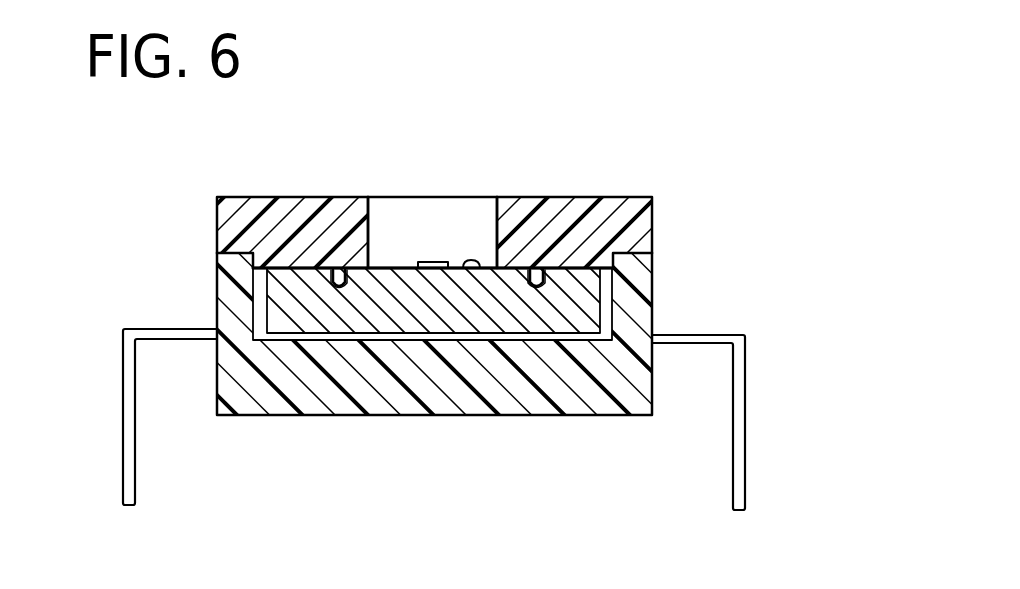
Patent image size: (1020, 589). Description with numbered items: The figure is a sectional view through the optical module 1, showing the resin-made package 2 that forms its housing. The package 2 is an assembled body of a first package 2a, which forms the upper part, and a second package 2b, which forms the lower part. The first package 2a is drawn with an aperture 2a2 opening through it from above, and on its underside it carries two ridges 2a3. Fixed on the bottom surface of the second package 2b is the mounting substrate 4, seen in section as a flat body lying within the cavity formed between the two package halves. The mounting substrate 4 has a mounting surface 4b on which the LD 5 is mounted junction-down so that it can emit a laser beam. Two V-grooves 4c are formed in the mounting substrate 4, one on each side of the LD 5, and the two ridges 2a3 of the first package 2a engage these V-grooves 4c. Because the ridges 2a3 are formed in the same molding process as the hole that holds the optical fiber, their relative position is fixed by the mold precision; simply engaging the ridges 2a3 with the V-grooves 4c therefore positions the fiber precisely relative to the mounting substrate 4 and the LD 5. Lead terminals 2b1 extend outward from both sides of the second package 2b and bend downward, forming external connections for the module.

The optical module 1 is at (433, 304).
The package 2 is at (433, 325).
The first package 2a is at (445, 213).
The aperture 2a2 is at (494, 255).
The ridges 2a3 is at (333, 272).
The second package 2b is at (433, 377).
The lead terminals 2b1 is at (124, 463).
The mounting substrate 4 is at (447, 307).
The mounting surface 4b is at (478, 272).
The V-grooves 4c is at (345, 285).
The LD 5 is at (436, 262).